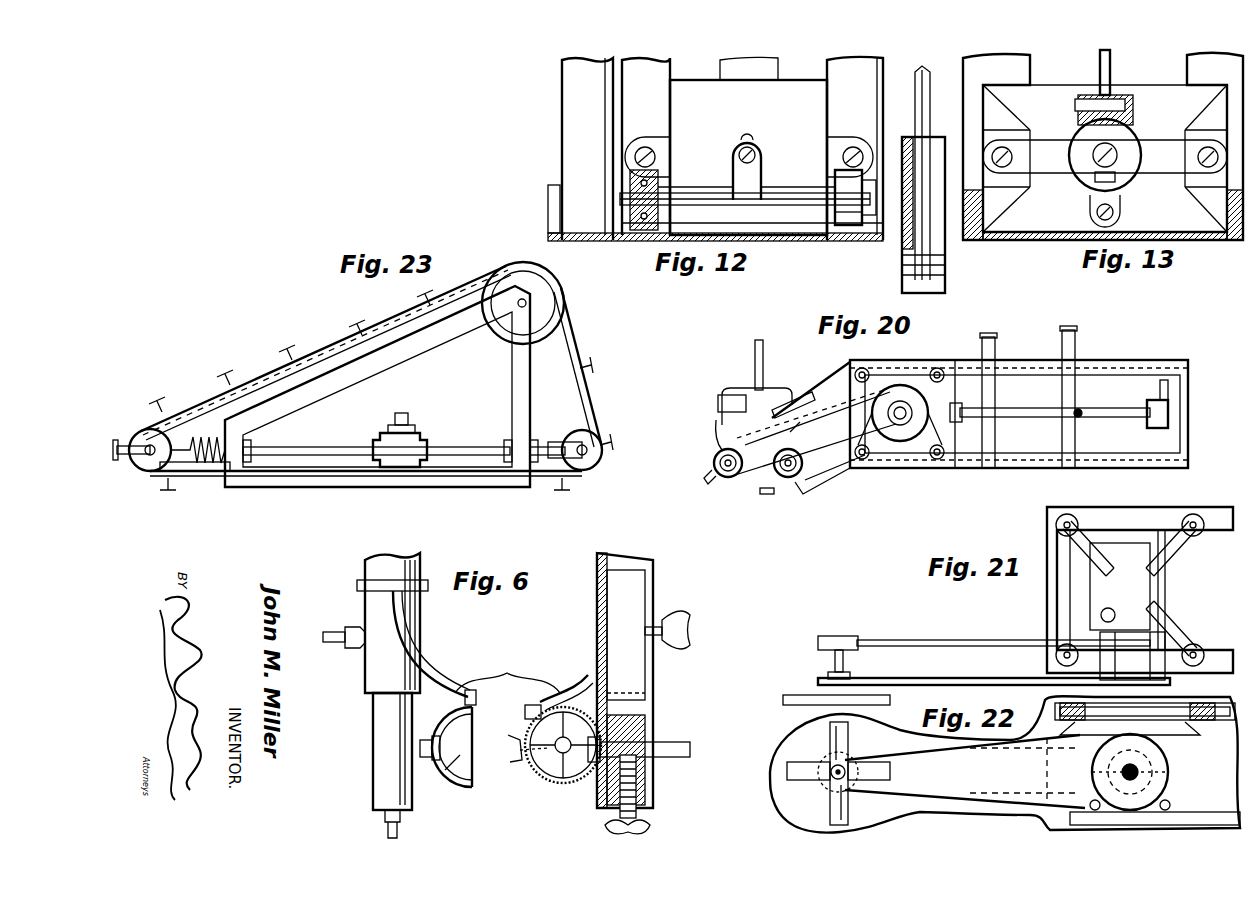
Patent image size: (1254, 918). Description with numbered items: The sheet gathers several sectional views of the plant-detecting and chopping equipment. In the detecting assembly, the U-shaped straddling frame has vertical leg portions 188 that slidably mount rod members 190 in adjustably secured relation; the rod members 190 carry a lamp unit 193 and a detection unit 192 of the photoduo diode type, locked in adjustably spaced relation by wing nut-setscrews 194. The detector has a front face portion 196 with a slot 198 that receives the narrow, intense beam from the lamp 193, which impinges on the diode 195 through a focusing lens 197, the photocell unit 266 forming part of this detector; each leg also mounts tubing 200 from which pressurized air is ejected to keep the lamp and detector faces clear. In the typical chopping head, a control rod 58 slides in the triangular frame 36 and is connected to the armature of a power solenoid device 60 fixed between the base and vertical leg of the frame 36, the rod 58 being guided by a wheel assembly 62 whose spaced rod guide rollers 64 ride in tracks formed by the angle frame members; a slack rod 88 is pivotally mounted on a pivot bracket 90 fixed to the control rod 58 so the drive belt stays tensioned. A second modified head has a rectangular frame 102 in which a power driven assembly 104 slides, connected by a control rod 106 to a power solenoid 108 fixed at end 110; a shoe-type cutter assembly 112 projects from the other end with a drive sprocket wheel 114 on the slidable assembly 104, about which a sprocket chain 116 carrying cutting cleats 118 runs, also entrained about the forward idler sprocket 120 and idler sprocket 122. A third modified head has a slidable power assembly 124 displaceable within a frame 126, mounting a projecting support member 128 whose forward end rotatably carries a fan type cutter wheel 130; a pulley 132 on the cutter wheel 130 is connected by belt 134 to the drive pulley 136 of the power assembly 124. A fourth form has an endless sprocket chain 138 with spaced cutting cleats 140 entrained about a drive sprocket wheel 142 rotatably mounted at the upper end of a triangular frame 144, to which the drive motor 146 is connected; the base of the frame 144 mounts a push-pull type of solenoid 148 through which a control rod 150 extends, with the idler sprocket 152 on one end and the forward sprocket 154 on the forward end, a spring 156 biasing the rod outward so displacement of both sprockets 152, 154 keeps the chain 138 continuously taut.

In FIG. 12, the triangular shaped frame 36 is at (853, 244).
In FIG. 13, the triangular shaped frame 36 is at (1222, 240).
In FIG. 12, the control rod 58 is at (752, 147).
In FIG. 13, the control rod 58 is at (1100, 163).
In FIG. 12, the power solenoid device 60 is at (782, 92).
In FIG. 12, the wheel assembly 62 is at (694, 190).
In FIG. 12, the rod guide rollers 64 is at (845, 210).
In FIG. 13, the slack rod 88 is at (1112, 60).
In FIG. 13, the pivot bracket 90 is at (1123, 132).
In FIG. 20, the rectangular frame 102 is at (903, 368).
In FIG. 20, the power driven assembly 104 is at (913, 453).
In FIG. 20, the control rod 106 is at (1030, 420).
In FIG. 20, the power solenoid 108 is at (1148, 403).
In FIG. 20, the end of the frame 110 is at (1190, 417).
In FIG. 20, the shoe-type cutter assembly 112 is at (762, 473).
In FIG. 20, the drive sprocket wheel 114 is at (890, 457).
In FIG. 20, the sprocket chain 116 is at (775, 425).
In FIG. 20, the cutting cleats 118 is at (847, 403).
In FIG. 20, the forward idler sprocket 120 is at (725, 480).
In FIG. 20, the idler sprocket 122 is at (792, 478).
In FIG. 21, the slidable power assembly 124 is at (1175, 590).
In FIG. 21, the frame 126 is at (1150, 510).
In FIG. 21, the projecting support member 128 is at (947, 677).
In FIG. 22, the projecting support member 128 is at (977, 783).
In FIG. 21, the fan type cutter wheel 130 is at (793, 692).
In FIG. 22, the fan type cutter wheel 130 is at (805, 782).
In FIG. 21, the pulley 132 is at (843, 637).
In FIG. 21, the belt 134 is at (908, 640).
In FIG. 21, the drive pulley 136 is at (1157, 633).
In FIG. 23, the endless sprocket chain 138 is at (203, 467).
In FIG. 23, the cutting cleats 140 is at (228, 383).
In FIG. 23, the drive sprocket wheel 142 is at (530, 288).
In FIG. 23, the triangular frame 144 is at (453, 337).
In FIG. 23, the drive motor 146 is at (513, 267).
In FIG. 23, the push-pull type of solenoid 148 is at (410, 447).
In FIG. 23, the control rod 150 is at (332, 446).
In FIG. 23, the idler sprocket 152 is at (590, 432).
In FIG. 23, the forward sprocket 154 is at (137, 432).
In FIG. 23, the spring 156 is at (207, 440).
In FIG. 6, the vertical leg portions 188 is at (653, 673).
In FIG. 6, the rod members 190 is at (640, 715).
In FIG. 6, the detection unit 192 is at (556, 782).
In FIG. 6, the lamp unit 193 is at (443, 780).
In FIG. 6, the wing nut-setscrews 194 is at (647, 790).
In FIG. 6, the diode 195 is at (567, 737).
In FIG. 6, the front face portion 196 is at (540, 773).
In FIG. 6, the focusing lens 197 is at (530, 757).
In FIG. 6, the slot 198 is at (518, 745).
In FIG. 6, the tubing 200 is at (507, 670).
In FIG. 6, the photocell unit 266 is at (540, 770).